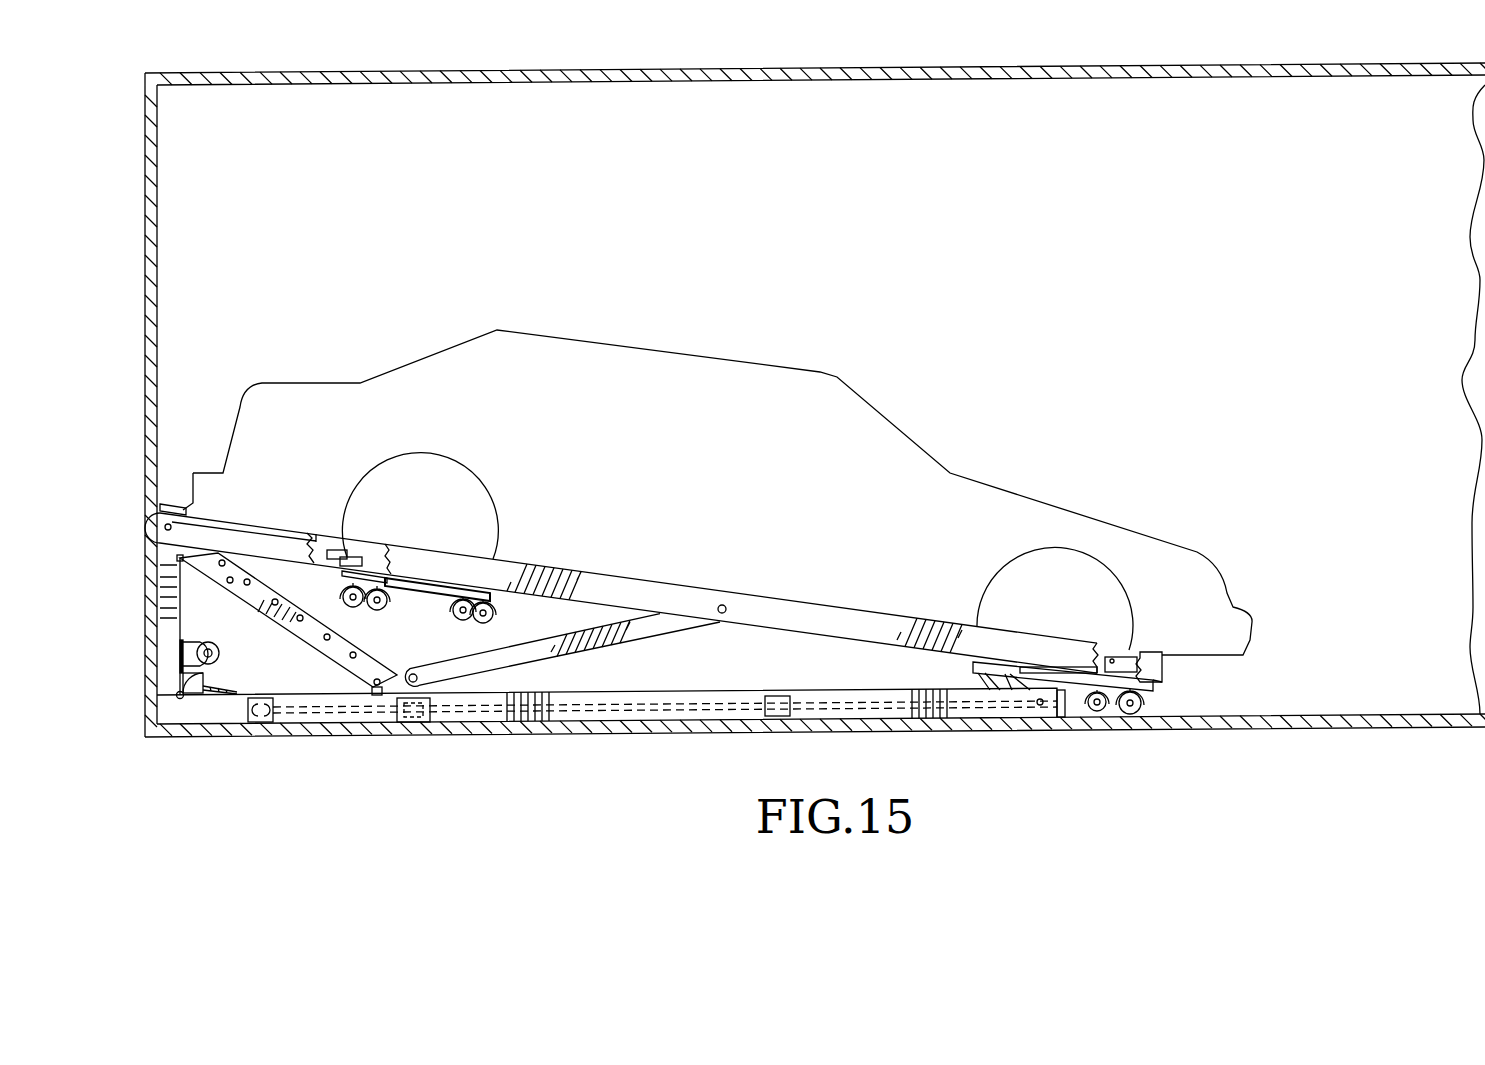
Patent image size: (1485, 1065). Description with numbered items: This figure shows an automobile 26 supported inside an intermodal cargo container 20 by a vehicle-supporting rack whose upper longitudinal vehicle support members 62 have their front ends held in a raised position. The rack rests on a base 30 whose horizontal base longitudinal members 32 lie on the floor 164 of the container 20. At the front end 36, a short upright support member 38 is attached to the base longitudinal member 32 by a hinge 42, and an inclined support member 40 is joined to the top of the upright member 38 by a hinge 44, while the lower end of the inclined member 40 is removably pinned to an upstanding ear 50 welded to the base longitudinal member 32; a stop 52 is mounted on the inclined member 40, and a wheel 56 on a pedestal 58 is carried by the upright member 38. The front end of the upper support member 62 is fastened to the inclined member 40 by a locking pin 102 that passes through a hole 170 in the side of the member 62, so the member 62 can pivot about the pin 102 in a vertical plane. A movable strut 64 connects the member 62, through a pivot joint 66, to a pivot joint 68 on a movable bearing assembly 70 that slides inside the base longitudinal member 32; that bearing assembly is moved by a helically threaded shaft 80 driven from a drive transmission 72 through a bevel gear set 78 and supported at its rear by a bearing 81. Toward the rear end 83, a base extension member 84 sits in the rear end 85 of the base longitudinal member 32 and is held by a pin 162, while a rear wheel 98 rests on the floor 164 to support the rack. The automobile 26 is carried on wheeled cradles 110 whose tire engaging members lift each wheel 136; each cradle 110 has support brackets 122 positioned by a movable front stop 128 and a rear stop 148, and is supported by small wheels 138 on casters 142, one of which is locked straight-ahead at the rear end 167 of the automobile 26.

The intermodal cargo container 20 is at (1068, 64).
The automobile 26 is at (920, 446).
The base 30 is at (622, 722).
The base longitudinal member 32 is at (885, 710).
The front end 36 is at (145, 703).
The upright support member 38 is at (172, 621).
The inclined support member 40 is at (315, 643).
The hinge 42 is at (186, 718).
The hinge 44 is at (183, 562).
The upstanding ear 50 is at (380, 700).
The stop 52 is at (172, 505).
The wheel 56 is at (220, 652).
The pedestal 58 is at (205, 682).
The upper longitudinal vehicle support member 62 is at (612, 573).
The movable strut 64 is at (580, 656).
The pivot joint 66 is at (725, 606).
The pivot joint 68 is at (416, 670).
The movable bearing assembly 70 is at (412, 714).
The drive transmission 72 is at (200, 716).
The bevel gear set 78 is at (277, 720).
The helically threaded shaft 80 is at (625, 714).
The bearing 81 is at (790, 708).
The rear end 83 is at (1175, 676).
The longitudinal base extension member 84 is at (1082, 716).
The rear end 85 is at (1058, 716).
The rear wheel 98 is at (1145, 705).
The locking pin 102 is at (178, 524).
The wheeled cradle 110 is at (452, 574).
The support bracket 122 is at (358, 556).
The movable front stop 128 is at (330, 549).
The wheel 136 is at (430, 456).
The small wheel 138 is at (1115, 712).
The caster 142 is at (335, 600).
The rear stop 148 is at (1140, 660).
The pin 162 is at (1040, 706).
The floor 164 is at (1297, 714).
The rear end 167 is at (234, 403).
The hole 170 is at (200, 533).